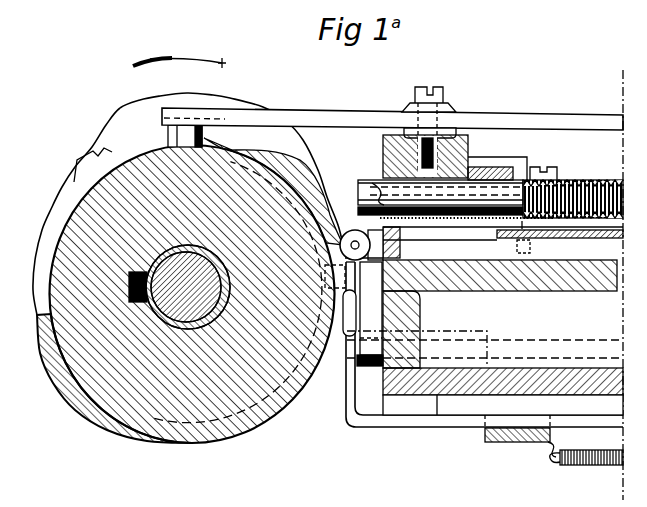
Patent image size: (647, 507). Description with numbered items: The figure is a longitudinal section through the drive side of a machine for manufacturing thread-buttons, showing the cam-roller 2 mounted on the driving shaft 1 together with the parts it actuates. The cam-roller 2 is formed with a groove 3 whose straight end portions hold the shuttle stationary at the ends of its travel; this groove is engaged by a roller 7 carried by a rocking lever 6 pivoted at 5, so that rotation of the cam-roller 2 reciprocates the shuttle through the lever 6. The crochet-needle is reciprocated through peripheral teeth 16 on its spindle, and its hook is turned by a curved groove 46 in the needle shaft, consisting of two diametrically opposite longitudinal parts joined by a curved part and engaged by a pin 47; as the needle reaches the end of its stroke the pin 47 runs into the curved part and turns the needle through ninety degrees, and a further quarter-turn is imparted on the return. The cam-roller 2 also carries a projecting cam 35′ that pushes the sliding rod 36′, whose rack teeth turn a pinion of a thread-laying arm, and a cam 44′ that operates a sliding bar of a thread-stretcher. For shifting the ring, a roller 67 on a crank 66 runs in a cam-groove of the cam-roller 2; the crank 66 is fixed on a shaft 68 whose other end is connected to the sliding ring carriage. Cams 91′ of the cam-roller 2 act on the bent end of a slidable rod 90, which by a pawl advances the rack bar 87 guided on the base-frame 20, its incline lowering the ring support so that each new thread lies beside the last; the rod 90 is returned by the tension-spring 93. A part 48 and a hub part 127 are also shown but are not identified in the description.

The driving shaft 1 is at (186, 326).
The cam-roller 2 is at (235, 423).
The groove 3 is at (46, 218).
The pivot 5 is at (432, 102).
The rocking lever 6 is at (343, 114).
The roller 7 is at (170, 140).
The peripheral teeth 16 is at (578, 180).
The frame 20 is at (443, 323).
The projecting cam 35′ is at (152, 120).
The sliding rod 36′ is at (483, 248).
The cam 44′ is at (222, 103).
The curved groove 46 is at (380, 184).
The pin 47 is at (528, 164).
The plate 48 is at (477, 167).
The crank 66 is at (350, 276).
The roller 67 is at (333, 243).
The shaft 68 is at (507, 343).
The rack bar 87 is at (543, 402).
The slidable rod 90 is at (434, 423).
The cam 91′ is at (92, 155).
The tension-spring 93 is at (570, 466).
The hub bushing 127 is at (187, 329).